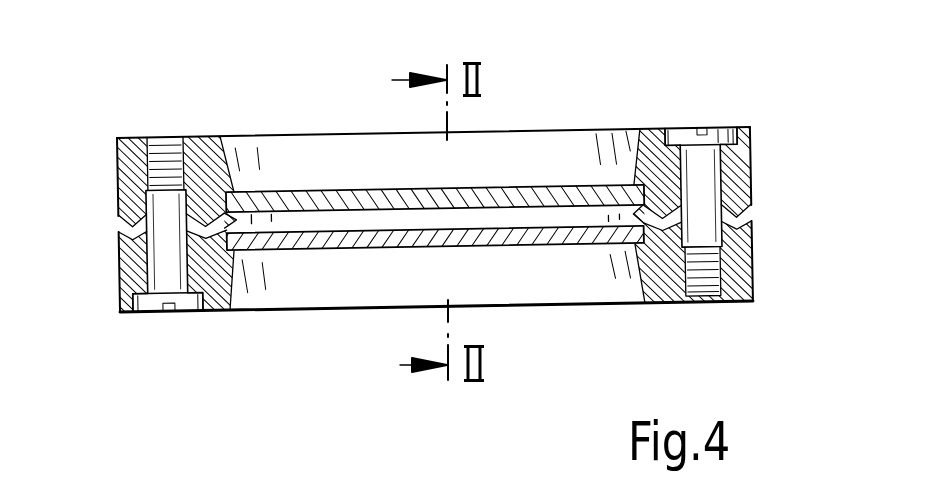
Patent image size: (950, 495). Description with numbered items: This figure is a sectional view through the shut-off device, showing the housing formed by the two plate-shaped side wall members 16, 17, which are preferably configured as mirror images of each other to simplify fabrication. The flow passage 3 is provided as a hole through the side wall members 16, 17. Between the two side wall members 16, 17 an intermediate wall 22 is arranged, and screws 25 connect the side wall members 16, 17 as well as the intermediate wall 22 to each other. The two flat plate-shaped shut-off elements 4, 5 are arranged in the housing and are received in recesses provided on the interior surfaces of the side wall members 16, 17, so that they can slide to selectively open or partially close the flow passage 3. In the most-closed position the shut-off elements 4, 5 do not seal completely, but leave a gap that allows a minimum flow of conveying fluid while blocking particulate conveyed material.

The flow passage 3 is at (347, 163).
The shut-off element 4 is at (553, 193).
The shut-off element 5 is at (418, 246).
The side wall member 16 is at (205, 163).
The side wall member 17 is at (215, 298).
The intermediate wall 22 is at (737, 215).
The screw 25 is at (162, 260).